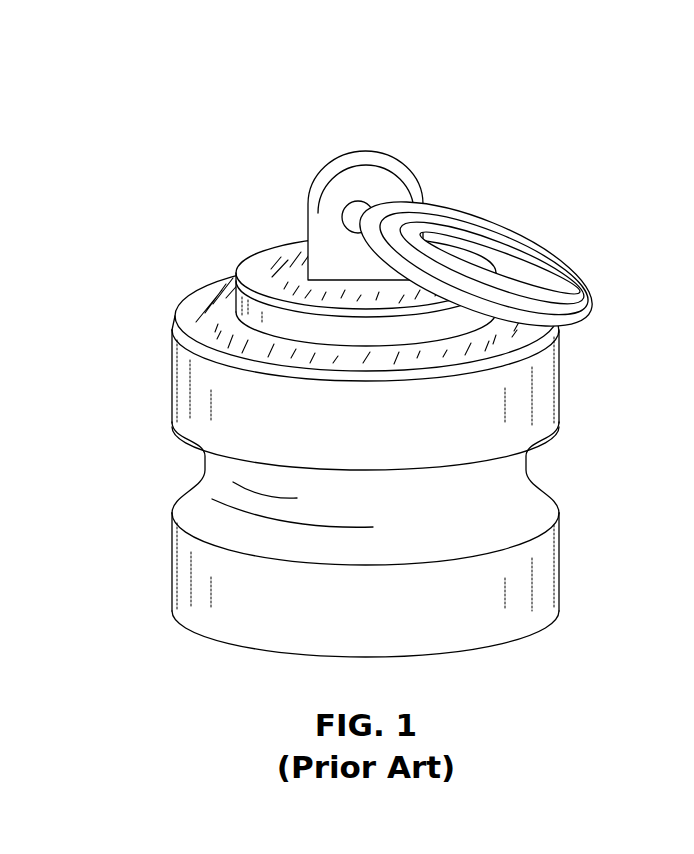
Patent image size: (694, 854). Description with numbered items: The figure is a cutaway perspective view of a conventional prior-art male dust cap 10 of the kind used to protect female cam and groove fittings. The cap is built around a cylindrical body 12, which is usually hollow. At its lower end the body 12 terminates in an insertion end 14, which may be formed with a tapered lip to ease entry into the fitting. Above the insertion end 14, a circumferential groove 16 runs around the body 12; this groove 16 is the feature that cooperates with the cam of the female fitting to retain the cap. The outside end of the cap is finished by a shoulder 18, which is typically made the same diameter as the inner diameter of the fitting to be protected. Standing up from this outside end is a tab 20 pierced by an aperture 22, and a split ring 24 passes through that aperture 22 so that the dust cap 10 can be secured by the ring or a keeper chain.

The male dust cap 10 is at (200, 100).
The cylindrical body 12 is at (542, 388).
The insertion end 14 is at (548, 564).
The circumferential groove 16 is at (523, 493).
The shoulder 18 is at (188, 312).
The tab 20 is at (388, 155).
The aperture 22 is at (355, 207).
The split ring 24 is at (545, 252).